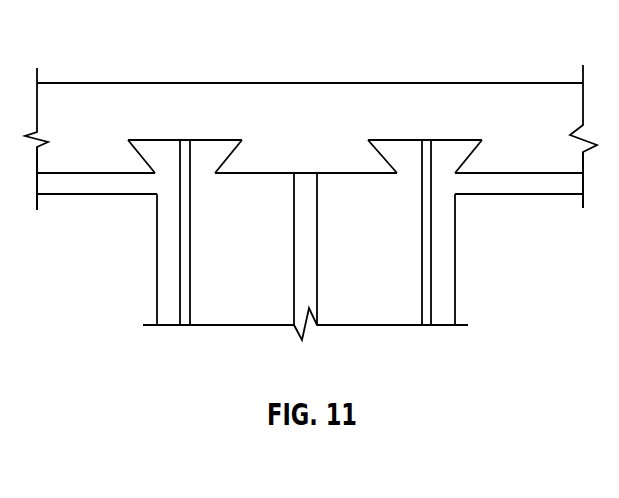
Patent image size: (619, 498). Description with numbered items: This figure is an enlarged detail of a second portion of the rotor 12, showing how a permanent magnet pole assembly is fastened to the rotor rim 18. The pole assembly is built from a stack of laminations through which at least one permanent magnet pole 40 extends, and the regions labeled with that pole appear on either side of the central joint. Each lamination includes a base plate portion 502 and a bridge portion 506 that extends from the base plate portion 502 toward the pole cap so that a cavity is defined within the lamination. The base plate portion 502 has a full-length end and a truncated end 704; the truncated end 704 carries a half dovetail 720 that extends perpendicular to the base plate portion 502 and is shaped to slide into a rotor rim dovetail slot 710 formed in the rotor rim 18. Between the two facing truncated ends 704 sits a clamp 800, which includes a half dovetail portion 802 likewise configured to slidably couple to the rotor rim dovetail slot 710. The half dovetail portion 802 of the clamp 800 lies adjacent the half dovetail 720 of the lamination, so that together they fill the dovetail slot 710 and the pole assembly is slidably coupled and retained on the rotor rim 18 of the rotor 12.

The rotor 12 is at (418, 88).
The rotor rim 18 is at (567, 172).
The permanent magnet pole 40 is at (130, 272).
The base plate portion 502 is at (50, 188).
The bridge portion 506 is at (162, 282).
The truncated end 704 is at (144, 129).
The rotor rim dovetail slot 710 is at (185, 128).
The half dovetail 720 is at (167, 157).
The clamp 800 is at (260, 272).
The half dovetail portion 802 is at (205, 145).